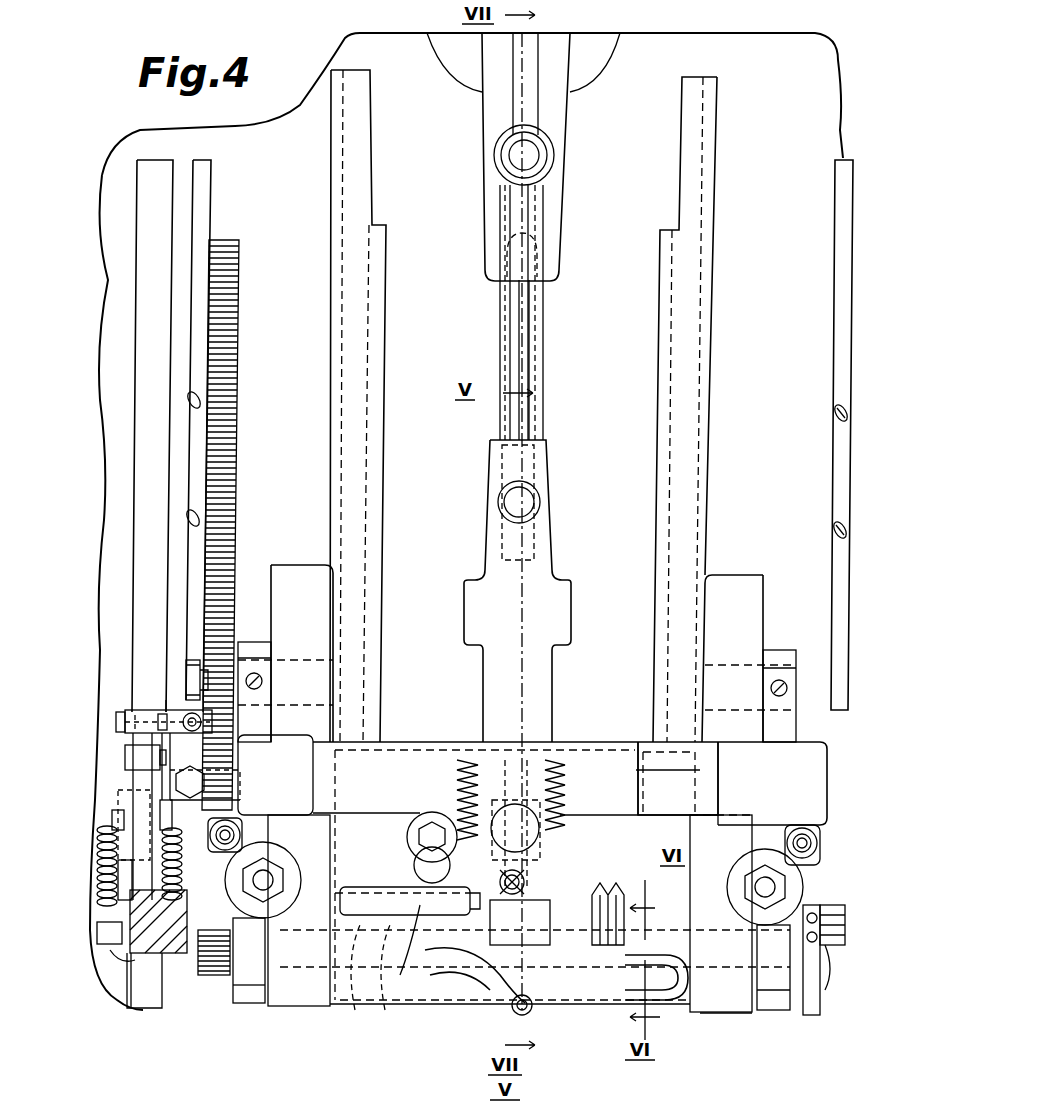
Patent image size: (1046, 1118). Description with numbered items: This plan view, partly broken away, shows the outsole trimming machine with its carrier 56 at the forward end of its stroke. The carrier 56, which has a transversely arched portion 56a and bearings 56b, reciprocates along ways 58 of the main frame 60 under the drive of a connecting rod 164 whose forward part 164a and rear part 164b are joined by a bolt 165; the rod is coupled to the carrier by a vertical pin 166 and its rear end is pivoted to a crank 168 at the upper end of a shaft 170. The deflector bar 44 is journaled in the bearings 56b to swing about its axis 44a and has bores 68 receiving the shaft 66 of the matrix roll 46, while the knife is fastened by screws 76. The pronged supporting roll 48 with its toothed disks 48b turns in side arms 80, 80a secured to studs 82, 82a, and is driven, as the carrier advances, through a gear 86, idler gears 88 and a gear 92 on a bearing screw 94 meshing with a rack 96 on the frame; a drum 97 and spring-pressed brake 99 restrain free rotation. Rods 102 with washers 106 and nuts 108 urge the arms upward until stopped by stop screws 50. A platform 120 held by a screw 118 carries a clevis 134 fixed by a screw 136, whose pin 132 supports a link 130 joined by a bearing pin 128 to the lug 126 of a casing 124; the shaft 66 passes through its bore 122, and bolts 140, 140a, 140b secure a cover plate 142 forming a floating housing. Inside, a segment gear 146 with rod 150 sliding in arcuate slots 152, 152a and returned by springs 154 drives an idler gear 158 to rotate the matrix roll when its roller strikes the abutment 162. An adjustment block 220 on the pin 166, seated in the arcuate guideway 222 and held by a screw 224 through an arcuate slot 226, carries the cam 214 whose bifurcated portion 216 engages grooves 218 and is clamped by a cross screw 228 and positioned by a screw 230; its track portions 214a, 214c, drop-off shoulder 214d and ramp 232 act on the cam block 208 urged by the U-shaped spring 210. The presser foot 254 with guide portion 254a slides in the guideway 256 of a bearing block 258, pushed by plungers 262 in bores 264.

The deflector bar 44 is at (675, 990).
The axis of the deflector bar 44a is at (777, 935).
The matrix roll 46 is at (448, 958).
The pronged outsole supporting roll 48 is at (690, 840).
The toothed or pronged disks 48b is at (620, 905).
The stop screws 50 is at (242, 830).
The carrier 56 is at (330, 1008).
The transversely arched portion of the carrier 56a is at (642, 745).
The bearings of the carrier 56b is at (735, 975).
The ways 58 is at (383, 495).
The main frame 60 is at (582, 394).
The shaft 66 is at (358, 965).
The bores 68 is at (348, 1000).
The screws 76 is at (430, 828).
The side arm 80 is at (266, 790).
The side arm 80a is at (795, 745).
The stud 82 is at (295, 655).
The stud 82a is at (725, 662).
The gear 86 is at (214, 978).
The idler gears 88 is at (226, 802).
The gear 92 is at (222, 665).
The bearing screw 94 is at (192, 660).
The rack 96 is at (238, 445).
The drum 97 is at (832, 975).
The spring-pressed brake 99 is at (812, 1015).
The rods 102 is at (760, 880).
The washers 106 is at (795, 830).
The nuts 108 is at (268, 870).
The screw 118 is at (206, 785).
The platform 120 is at (222, 762).
The bore 122 is at (125, 745).
The casing 124 is at (165, 955).
The rearwardly projecting lug 126 is at (128, 756).
The bearing pin 128 is at (135, 770).
The link 130 is at (122, 718).
The pin 132 is at (118, 710).
The clevis 134 is at (185, 713).
The screw 136 is at (165, 712).
The bolt 140 is at (172, 772).
The bolt 140a is at (180, 862).
The bolt 140b is at (246, 960).
The cover plate 142 is at (115, 910).
The segment gear 146 is at (125, 935).
The rod 150 is at (112, 815).
The arcuate slot 152 is at (92, 859).
The arcuate slot 152a is at (118, 870).
The springs 154 is at (125, 880).
The idler gear 158 is at (160, 975).
The abutment 162 is at (150, 1000).
The connecting rod 164 is at (548, 458).
The forward part of the connecting rod 164a is at (552, 555).
The rear part of the connecting rod 164b is at (543, 348).
The bolt 165 is at (532, 504).
The vertical pin 166 is at (518, 810).
The crank 168 is at (565, 225).
The shaft 170 is at (540, 150).
The cam block 208 is at (528, 1012).
The U-shaped spring 210 is at (640, 990).
The cam 214 is at (440, 985).
The track portion 214a is at (545, 975).
The track portion 214c is at (400, 930).
The drop-off shoulder 214d is at (520, 922).
The bifurcated portion 216 is at (580, 890).
The grooves 218 is at (585, 835).
The adjustment block 220 is at (415, 868).
The arcuate guideway 222 is at (466, 765).
The screw 224 is at (510, 870).
The arcuate slot 226 is at (593, 914).
The cross screw 228 is at (460, 912).
The screw 230 is at (505, 1008).
The ramp 232 is at (512, 1008).
The arcuate foot 254 is at (600, 895).
The guide portion 254a is at (600, 775).
The guideway 256 is at (445, 790).
The bearing block 258 is at (572, 760).
The spring-pressed plungers 262 is at (645, 840).
The bores 264 is at (410, 852).